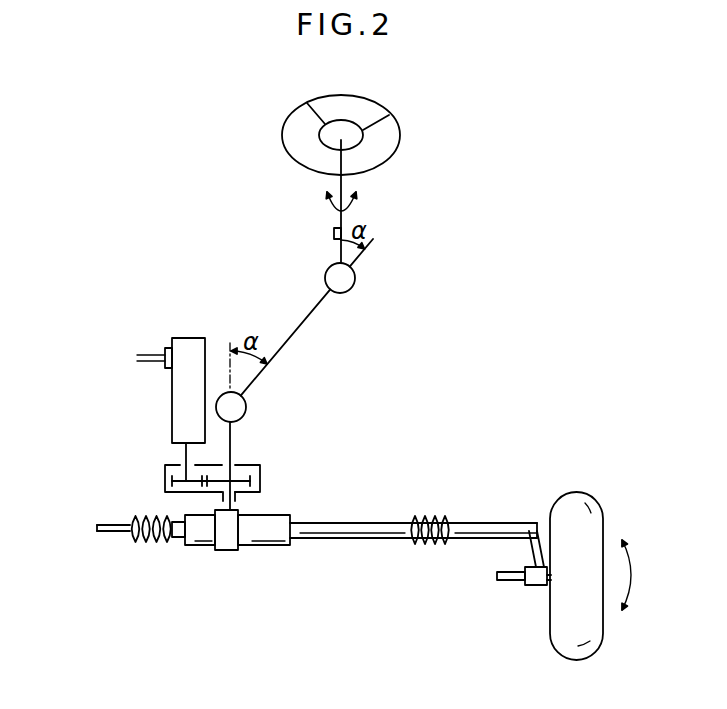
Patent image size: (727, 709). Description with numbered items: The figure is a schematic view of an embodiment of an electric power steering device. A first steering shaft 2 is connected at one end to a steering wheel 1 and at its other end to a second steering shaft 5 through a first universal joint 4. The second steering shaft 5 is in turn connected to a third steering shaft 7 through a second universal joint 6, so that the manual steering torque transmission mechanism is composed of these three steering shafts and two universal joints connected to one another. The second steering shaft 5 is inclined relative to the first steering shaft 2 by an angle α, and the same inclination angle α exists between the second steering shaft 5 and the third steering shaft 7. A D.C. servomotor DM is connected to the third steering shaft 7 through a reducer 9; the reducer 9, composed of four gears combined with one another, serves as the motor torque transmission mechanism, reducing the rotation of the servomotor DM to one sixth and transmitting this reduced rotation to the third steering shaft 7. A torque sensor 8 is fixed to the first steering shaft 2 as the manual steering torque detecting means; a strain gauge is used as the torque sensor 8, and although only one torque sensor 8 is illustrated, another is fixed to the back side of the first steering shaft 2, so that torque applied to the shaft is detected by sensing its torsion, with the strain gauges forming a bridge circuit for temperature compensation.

The steering wheel 1 is at (400, 147).
The first steering shaft 2 is at (341, 221).
The first universal joint 4 is at (355, 284).
The second steering shaft 5 is at (297, 330).
The second universal joint 6 is at (229, 392).
The third steering shaft 7 is at (233, 437).
The torque sensor 8 is at (333, 234).
The reducer 9 is at (261, 478).
The D.C. servomotor DM is at (188, 337).